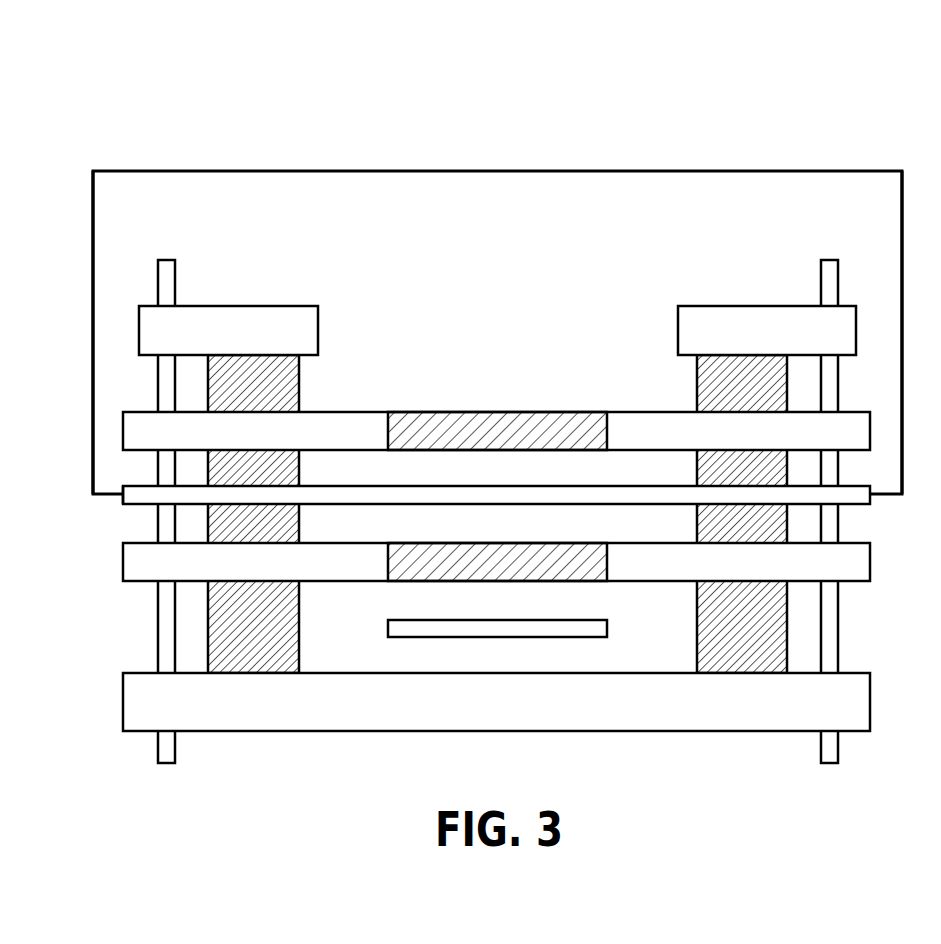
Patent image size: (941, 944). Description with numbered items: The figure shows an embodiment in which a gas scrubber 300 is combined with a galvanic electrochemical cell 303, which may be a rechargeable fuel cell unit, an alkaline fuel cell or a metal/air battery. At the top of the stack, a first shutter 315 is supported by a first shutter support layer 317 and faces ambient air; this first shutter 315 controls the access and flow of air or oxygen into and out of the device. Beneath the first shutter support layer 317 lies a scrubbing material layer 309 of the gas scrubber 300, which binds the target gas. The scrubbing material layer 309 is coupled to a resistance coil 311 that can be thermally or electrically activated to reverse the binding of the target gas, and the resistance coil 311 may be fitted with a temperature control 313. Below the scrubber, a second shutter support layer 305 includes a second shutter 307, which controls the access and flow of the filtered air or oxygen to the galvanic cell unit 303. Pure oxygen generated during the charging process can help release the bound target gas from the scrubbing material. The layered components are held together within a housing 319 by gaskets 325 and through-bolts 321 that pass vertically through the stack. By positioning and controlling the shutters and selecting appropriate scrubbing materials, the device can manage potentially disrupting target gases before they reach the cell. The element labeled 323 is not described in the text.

The gas scrubber 300 is at (722, 105).
The galvanic electrochemical cell 303 is at (607, 628).
The second shutter support layer 305 is at (668, 543).
The second shutter 307 is at (557, 543).
The scrubbing material layer 309 is at (607, 486).
The resistance coil 311 is at (93, 218).
The temperature control 313 is at (122, 497).
The first shutter 315 is at (580, 412).
The first shutter support layer 317 is at (651, 412).
The housing 319 is at (232, 344).
The through-bolts 321 is at (168, 260).
The housing 323 is at (582, 171).
The gaskets 325 is at (299, 628).